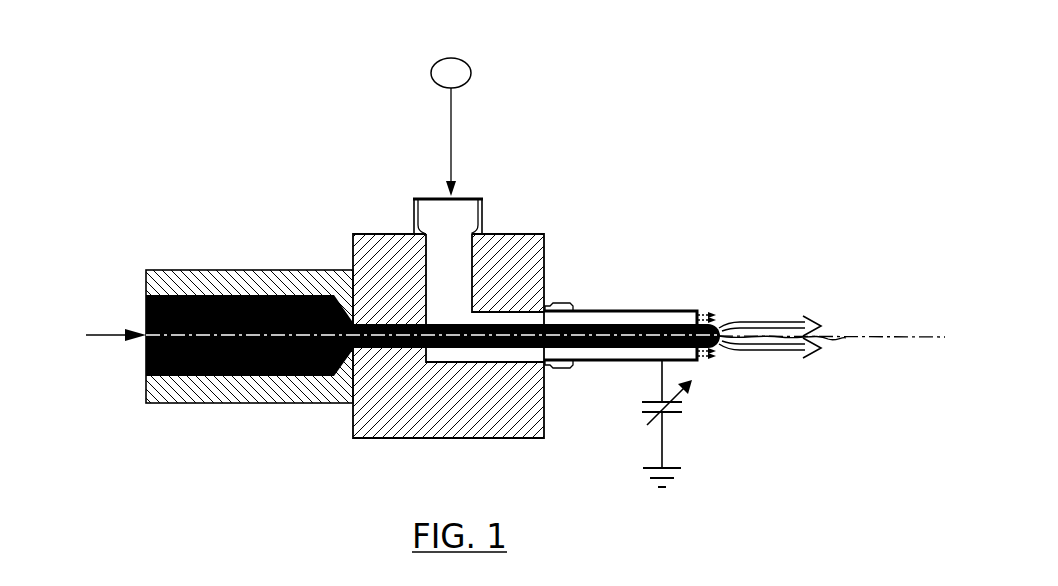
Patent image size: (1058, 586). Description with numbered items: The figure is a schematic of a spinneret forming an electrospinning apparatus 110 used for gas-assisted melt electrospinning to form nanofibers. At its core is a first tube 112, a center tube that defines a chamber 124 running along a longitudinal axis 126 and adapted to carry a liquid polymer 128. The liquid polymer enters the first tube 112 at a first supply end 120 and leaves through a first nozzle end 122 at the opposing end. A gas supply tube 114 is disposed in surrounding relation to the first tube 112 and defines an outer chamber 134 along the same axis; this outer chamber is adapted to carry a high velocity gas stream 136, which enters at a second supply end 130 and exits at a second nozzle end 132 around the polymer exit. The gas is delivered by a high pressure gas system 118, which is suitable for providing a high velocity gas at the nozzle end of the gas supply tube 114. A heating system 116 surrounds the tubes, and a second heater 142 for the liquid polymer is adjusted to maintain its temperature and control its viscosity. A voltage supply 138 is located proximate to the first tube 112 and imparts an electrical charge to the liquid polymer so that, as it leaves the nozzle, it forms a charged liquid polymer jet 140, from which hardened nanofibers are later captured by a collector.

The electrospinning apparatus 110 is at (720, 81).
The first tube 112 is at (212, 377).
The gas supply tube 114 is at (462, 218).
The heating system 116 is at (477, 418).
The high pressure gas system 118 is at (472, 72).
The first supply end 120 is at (128, 371).
The first nozzle end 122 is at (722, 325).
The chamber 124 is at (617, 346).
The longitudinal axis 126 is at (270, 337).
The liquid polymer 128 is at (107, 335).
The second supply end 130 is at (426, 190).
The second nozzle end 132 is at (695, 308).
The outer chamber 134 is at (634, 320).
The high velocity gas stream 136 is at (450, 137).
The voltage supply 138 is at (692, 443).
The charged liquid polymer jet 140 is at (834, 342).
The second heater 142 is at (308, 398).